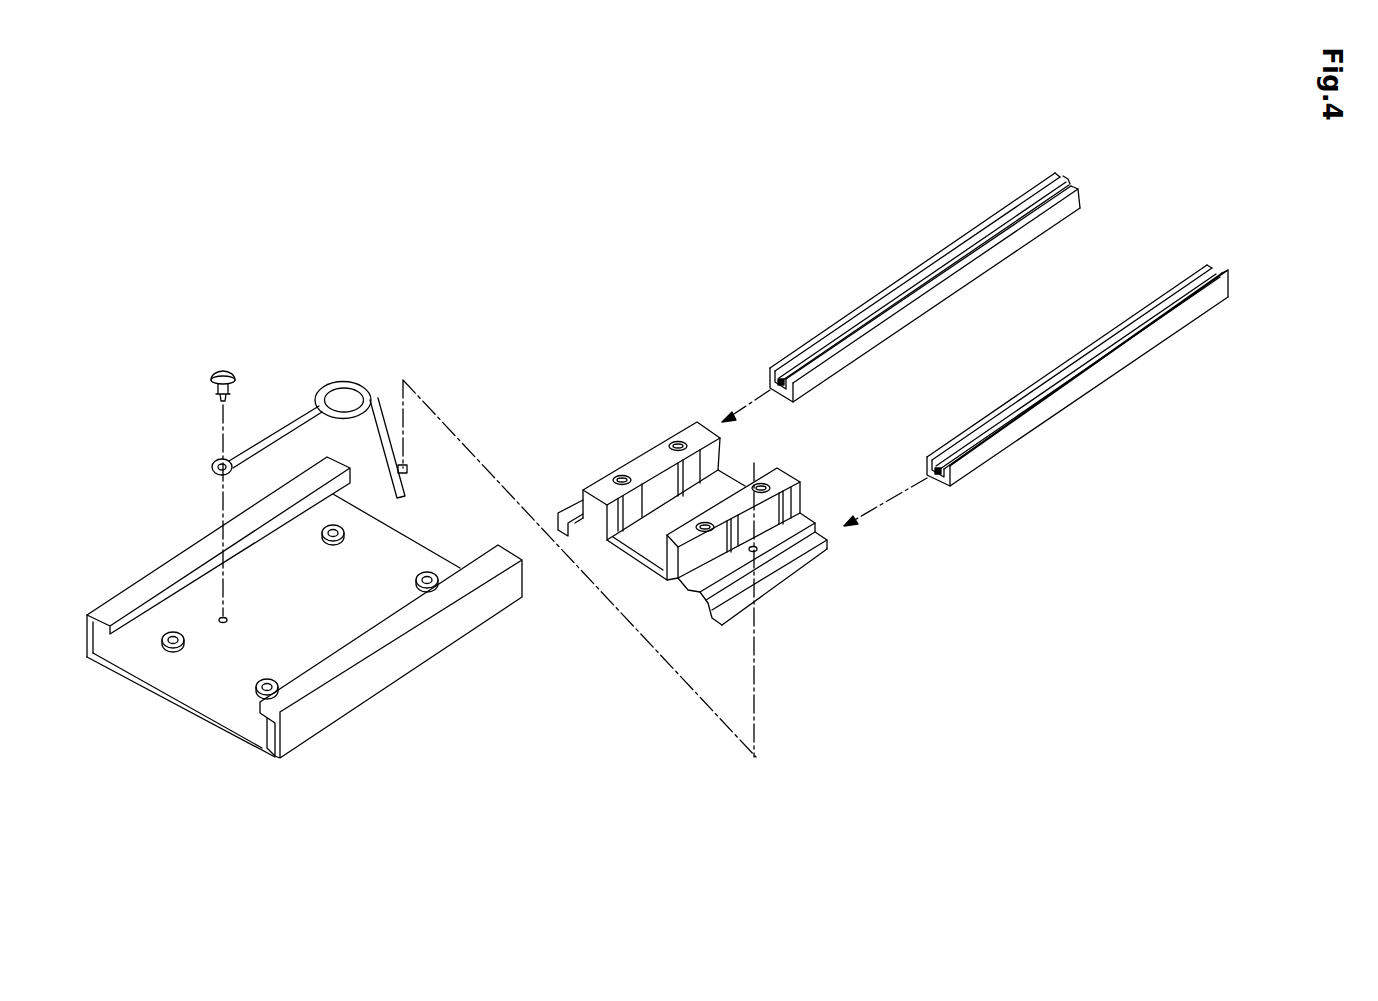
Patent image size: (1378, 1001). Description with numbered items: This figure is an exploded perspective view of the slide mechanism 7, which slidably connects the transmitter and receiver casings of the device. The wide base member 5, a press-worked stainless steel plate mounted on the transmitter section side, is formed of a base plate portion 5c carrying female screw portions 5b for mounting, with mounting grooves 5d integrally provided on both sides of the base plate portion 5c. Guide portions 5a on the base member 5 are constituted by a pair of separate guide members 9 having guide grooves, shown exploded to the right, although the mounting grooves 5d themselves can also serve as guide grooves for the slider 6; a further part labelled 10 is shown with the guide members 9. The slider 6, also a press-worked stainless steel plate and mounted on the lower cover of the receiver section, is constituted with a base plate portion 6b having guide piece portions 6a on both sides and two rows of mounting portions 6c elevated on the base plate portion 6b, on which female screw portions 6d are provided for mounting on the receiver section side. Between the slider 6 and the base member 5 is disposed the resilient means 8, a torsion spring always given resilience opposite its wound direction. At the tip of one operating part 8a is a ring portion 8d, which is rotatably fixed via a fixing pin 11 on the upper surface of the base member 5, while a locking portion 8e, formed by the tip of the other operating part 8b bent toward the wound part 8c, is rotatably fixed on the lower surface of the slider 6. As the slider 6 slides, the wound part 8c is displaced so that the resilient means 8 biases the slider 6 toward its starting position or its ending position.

The base member 5 is at (279, 639).
The guide portion 5a is at (545, 503).
The female screw portion 5b is at (168, 650).
The base plate portion 5c is at (211, 699).
The mounting groove 5d is at (75, 653).
The slider 6 is at (703, 488).
The guide piece portion 6a is at (810, 556).
The base plate portion 6b is at (652, 540).
The mounting portion 6c is at (655, 458).
The female screw portion 6d is at (620, 474).
The slide mechanism 7 is at (878, 391).
The resilient means 8 is at (306, 391).
The operating part 8a is at (289, 419).
The operating part 8b is at (392, 437).
The wound part 8c is at (331, 386).
The ring portion 8d is at (213, 468).
The locking portion 8e is at (402, 486).
The guide member 9 is at (958, 238).
The inner rail 10 is at (1068, 182).
The fixing pin 11 is at (210, 381).